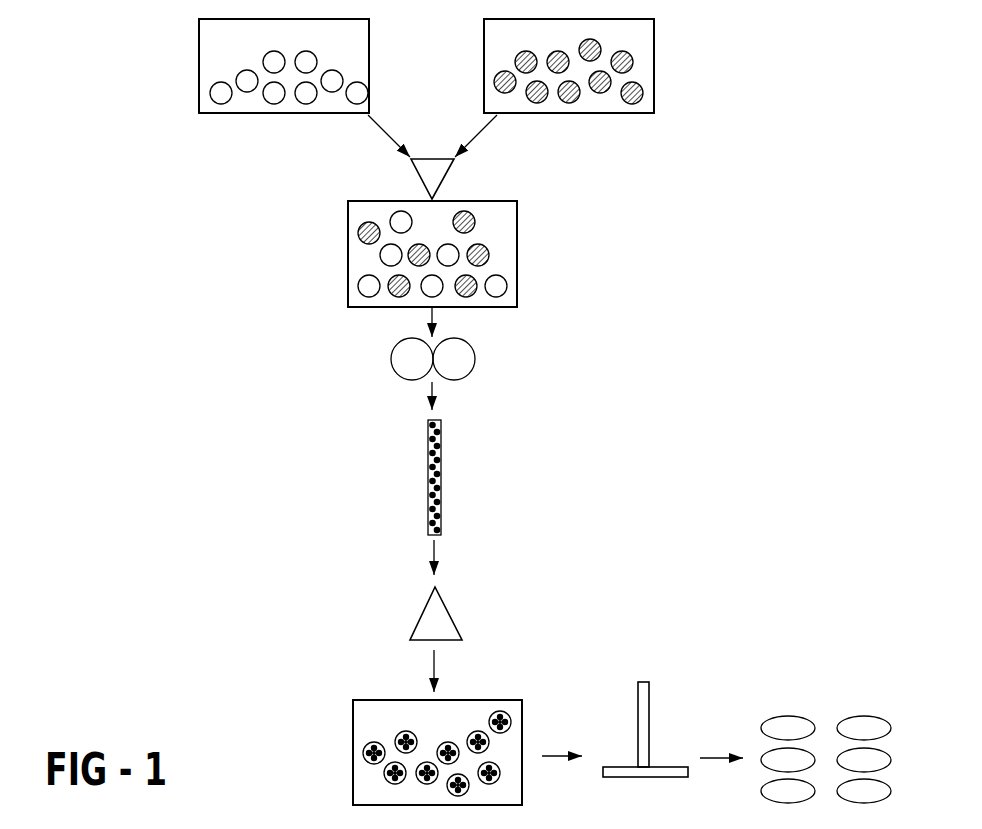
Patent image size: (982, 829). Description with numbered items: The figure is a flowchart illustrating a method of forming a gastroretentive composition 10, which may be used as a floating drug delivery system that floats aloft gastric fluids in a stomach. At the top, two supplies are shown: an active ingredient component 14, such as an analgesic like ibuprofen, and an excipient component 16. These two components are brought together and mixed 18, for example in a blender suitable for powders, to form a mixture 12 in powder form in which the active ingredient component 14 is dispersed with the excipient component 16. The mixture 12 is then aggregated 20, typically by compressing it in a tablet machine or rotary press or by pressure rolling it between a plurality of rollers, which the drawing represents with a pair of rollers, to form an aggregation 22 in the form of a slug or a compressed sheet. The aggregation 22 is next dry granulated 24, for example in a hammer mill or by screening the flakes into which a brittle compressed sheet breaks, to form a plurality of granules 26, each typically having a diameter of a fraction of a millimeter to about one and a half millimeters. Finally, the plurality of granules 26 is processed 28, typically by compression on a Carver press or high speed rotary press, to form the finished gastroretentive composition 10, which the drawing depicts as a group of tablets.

The gastroretentive composition 10 is at (878, 716).
The mixture 12 is at (497, 233).
The active ingredient component 14 is at (210, 93).
The excipient component 16 is at (633, 62).
The mixing step 18 is at (420, 180).
The aggregating step 20 is at (475, 358).
The aggregation 22 is at (441, 472).
The dry granulating step 24 is at (447, 608).
The plurality of granules 26 is at (385, 722).
The processing step 28 is at (650, 712).